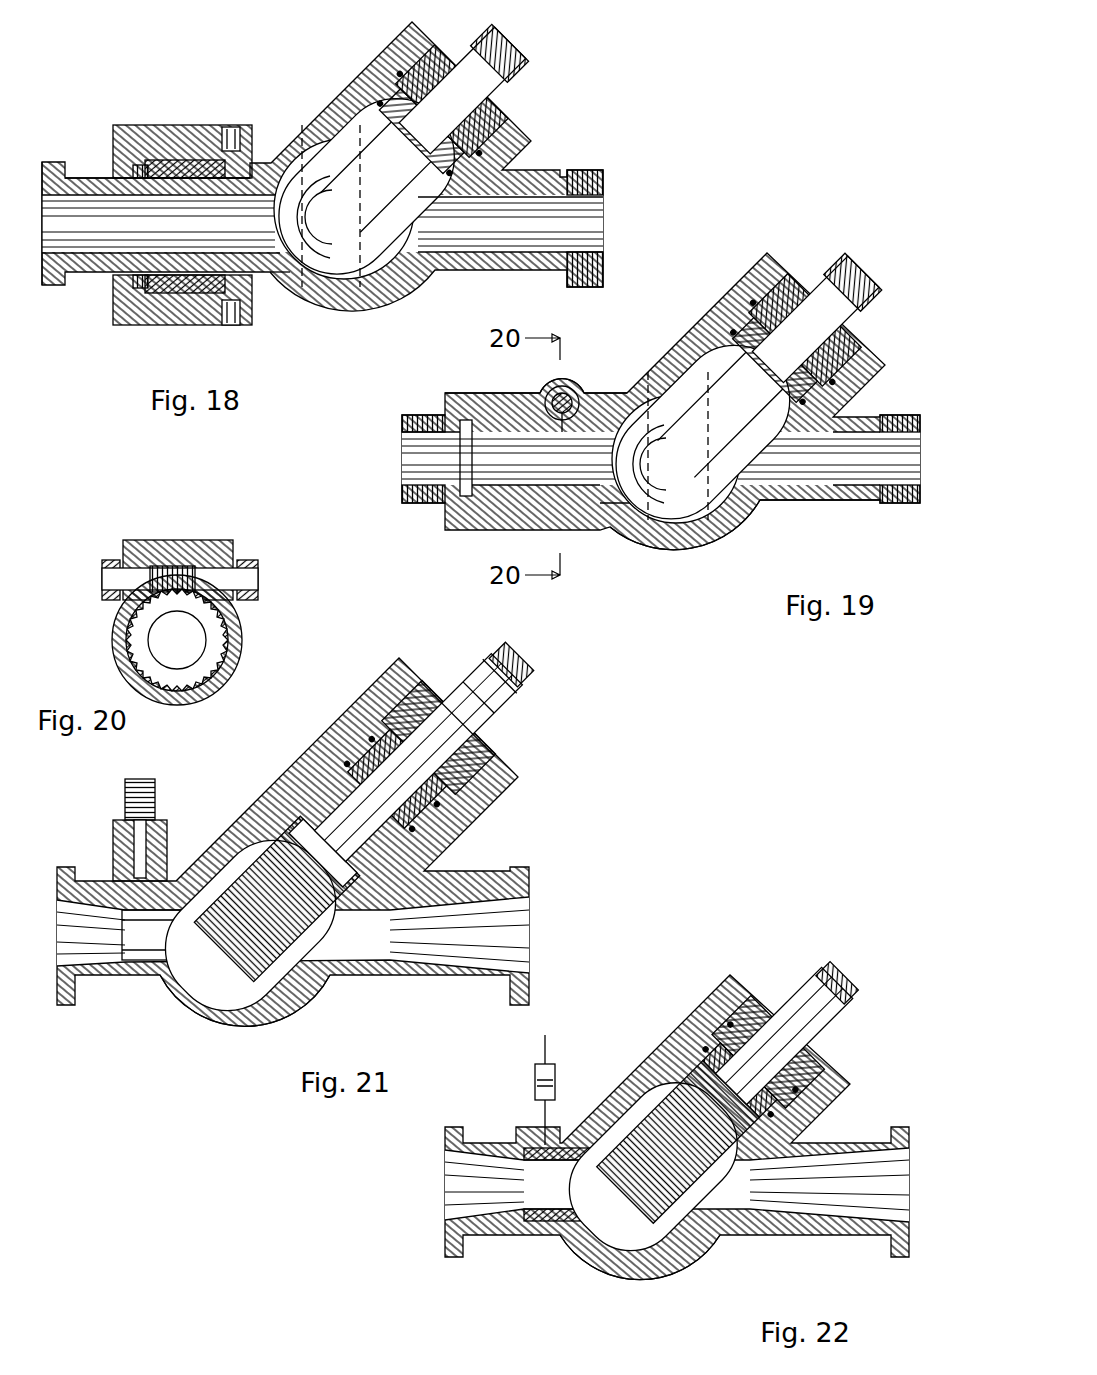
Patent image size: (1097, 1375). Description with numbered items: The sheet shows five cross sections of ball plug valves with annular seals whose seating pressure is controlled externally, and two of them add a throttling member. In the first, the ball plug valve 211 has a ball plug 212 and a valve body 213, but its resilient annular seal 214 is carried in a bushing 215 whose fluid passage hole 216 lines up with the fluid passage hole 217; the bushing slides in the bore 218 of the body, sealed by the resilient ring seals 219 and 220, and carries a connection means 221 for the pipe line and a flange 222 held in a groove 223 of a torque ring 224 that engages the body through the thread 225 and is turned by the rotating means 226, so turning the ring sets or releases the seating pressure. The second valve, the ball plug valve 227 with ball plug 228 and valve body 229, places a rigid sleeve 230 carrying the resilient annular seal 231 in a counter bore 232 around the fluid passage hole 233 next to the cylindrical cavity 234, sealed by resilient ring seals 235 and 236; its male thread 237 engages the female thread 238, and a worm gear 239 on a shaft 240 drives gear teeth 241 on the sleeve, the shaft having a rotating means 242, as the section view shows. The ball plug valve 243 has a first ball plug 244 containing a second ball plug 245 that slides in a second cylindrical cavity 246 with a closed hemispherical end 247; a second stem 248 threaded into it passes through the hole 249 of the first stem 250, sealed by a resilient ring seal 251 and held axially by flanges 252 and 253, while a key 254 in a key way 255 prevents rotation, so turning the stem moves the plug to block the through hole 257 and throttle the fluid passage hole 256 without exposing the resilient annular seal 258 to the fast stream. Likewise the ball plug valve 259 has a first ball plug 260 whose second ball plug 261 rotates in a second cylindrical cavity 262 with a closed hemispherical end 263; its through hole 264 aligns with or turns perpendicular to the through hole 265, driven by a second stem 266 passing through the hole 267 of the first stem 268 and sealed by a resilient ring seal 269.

In FIG. 18, the ball plug valve 211 is at (352, 284).
In FIG. 18, the ball plug 212 is at (405, 218).
In FIG. 18, the valve body 213 is at (372, 288).
In FIG. 18, the resilient annular seal 214 is at (295, 278).
In FIG. 18, the bushing 215 is at (82, 178).
In FIG. 18, the fluid passage hole 216 is at (72, 280).
In FIG. 18, the fluid passage hole 217 is at (497, 218).
In FIG. 18, the bore 218 is at (262, 178).
In FIG. 18, the resilient ring seal 219 is at (150, 290).
In FIG. 18, the resilient ring seal 220 is at (215, 320).
In FIG. 18, the connection means 221 is at (50, 285).
In FIG. 18, the flange 222 is at (110, 178).
In FIG. 18, the groove 223 is at (100, 276).
In FIG. 18, the torque ring 224 is at (140, 125).
In FIG. 18, the thread 225 is at (185, 160).
In FIG. 18, the locking screw 226 is at (230, 127).
In FIG. 19, the ball plug valve 227 is at (661, 422).
In FIG. 19, the ball plug 228 is at (822, 508).
In FIG. 19, the valve body 229 is at (782, 520).
In FIG. 19, the rigid sleeve 230 is at (540, 412).
In FIG. 20, the rigid sleeve 230 is at (130, 642).
In FIG. 19, the resilient annular seal 231 is at (655, 542).
In FIG. 19, the counter bore 232 is at (642, 405).
In FIG. 19, the fluid passage hole 233 is at (420, 468).
In FIG. 19, the cylindrical cavity 234 is at (735, 528).
In FIG. 19, the resilient ring seal 235 is at (525, 522).
In FIG. 19, the resilient ring seal 236 is at (575, 510).
In FIG. 19, the male thread 237 is at (440, 398).
In FIG. 19, the female thread 238 is at (458, 490).
In FIG. 19, the worm gear 239 is at (572, 392).
In FIG. 20, the worm gear 239 is at (195, 566).
In FIG. 19, the shaft 240 is at (552, 392).
In FIG. 20, the shaft 240 is at (142, 568).
In FIG. 19, the gear teeth 241 is at (590, 410).
In FIG. 20, the gear teeth 241 is at (228, 658).
In FIG. 20, the rotating means 242 is at (248, 560).
In FIG. 21, the ball plug valve 243 is at (256, 992).
In FIG. 21, the first ball plug 244 is at (215, 992).
In FIG. 21, the second ball plug 245 is at (188, 978).
In FIG. 21, the second cylindrical cavity 246 is at (430, 862).
In FIG. 21, the closed hemispherical end 247 is at (268, 985).
In FIG. 21, the second stem 248 is at (492, 712).
In FIG. 21, the hole 249 is at (498, 716).
In FIG. 21, the first stem 250 is at (422, 705).
In FIG. 21, the resilient ring seal 251 is at (335, 730).
In FIG. 21, the flange 252 is at (325, 748).
In FIG. 21, the flange 253 is at (484, 675).
In FIG. 21, the key 254 is at (235, 836).
In FIG. 21, the key way 255 is at (300, 778).
In FIG. 21, the fluid passage hole 256 is at (385, 958).
In FIG. 21, the through hole 257 is at (322, 975).
In FIG. 21, the resilient annular seal 258 is at (142, 982).
In FIG. 22, the ball plug valve 259 is at (642, 1268).
In FIG. 22, the first ball plug 260 is at (688, 1222).
In FIG. 22, the second ball plug 261 is at (570, 1128).
In FIG. 22, the second cylindrical cavity 262 is at (642, 1148).
In FIG. 22, the closed hemispherical end 263 is at (605, 1245).
In FIG. 22, the through hole 264 is at (522, 1238).
In FIG. 22, the through hole 265 is at (742, 1236).
In FIG. 22, the second stem 266 is at (844, 988).
In FIG. 22, the hole 267 is at (814, 990).
In FIG. 22, the first stem 268 is at (822, 1052).
In FIG. 22, the resilient ring seal 269 is at (705, 1105).